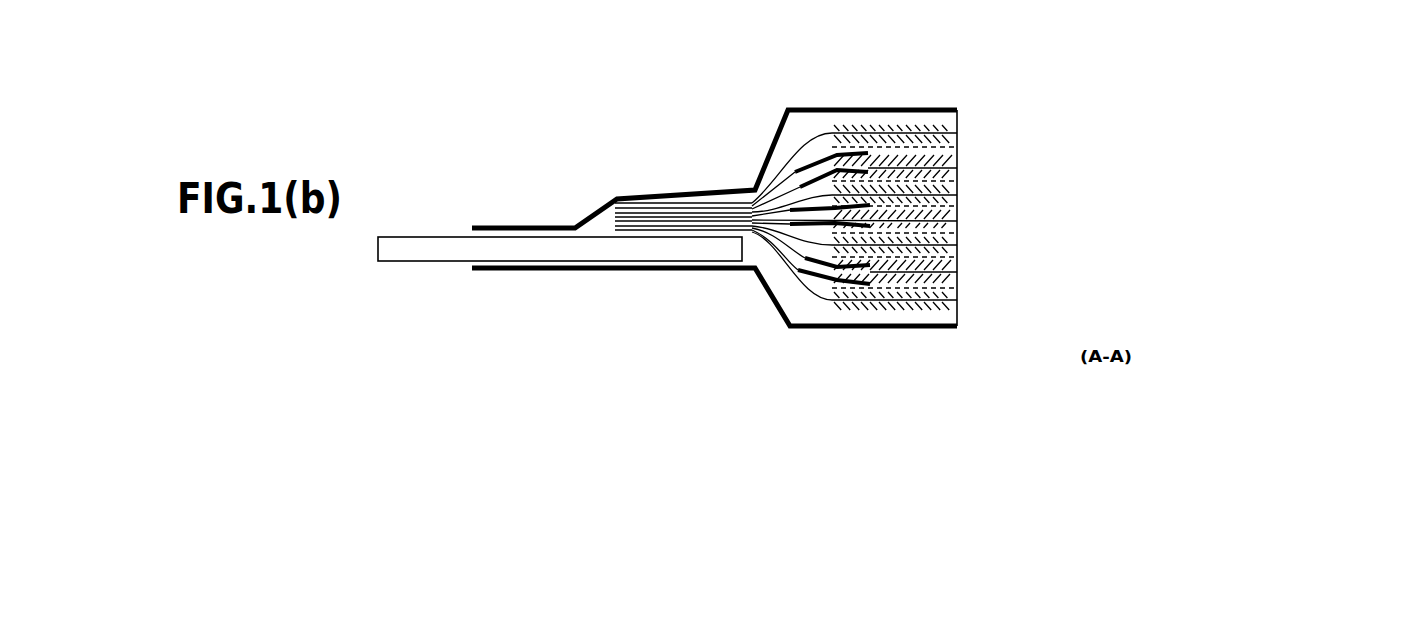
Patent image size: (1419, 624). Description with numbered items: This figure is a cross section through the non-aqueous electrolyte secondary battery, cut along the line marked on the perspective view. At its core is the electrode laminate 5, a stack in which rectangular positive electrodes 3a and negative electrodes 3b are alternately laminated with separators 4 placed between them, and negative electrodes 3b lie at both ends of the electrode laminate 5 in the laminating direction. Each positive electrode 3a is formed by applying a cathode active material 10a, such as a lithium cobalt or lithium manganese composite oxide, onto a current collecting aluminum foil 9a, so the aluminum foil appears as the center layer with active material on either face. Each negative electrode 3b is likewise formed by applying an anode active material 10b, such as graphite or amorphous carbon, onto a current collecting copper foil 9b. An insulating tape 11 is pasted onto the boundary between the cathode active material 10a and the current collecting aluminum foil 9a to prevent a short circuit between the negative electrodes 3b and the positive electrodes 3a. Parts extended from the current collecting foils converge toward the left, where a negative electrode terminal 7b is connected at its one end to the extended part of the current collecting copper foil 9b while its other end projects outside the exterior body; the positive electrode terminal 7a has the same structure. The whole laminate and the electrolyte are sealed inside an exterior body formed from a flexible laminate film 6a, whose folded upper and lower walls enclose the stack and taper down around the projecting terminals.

The electrode laminate 5 is at (1228, 95).
The negative electrode 3b is at (977, 209).
The positive electrode 3a is at (977, 217).
The anode active material 10b is at (957, 132).
The current collecting copper foil 9b is at (957, 136).
The cathode active material 10a is at (957, 160).
The current collecting aluminum foil 9a is at (957, 168).
The separator 4 is at (957, 147).
The laminate film 6a is at (913, 108).
The positive electrode terminal 7a is at (560, 199).
The negative electrode terminal 7b is at (396, 240).
The insulating tape 11 is at (800, 186).